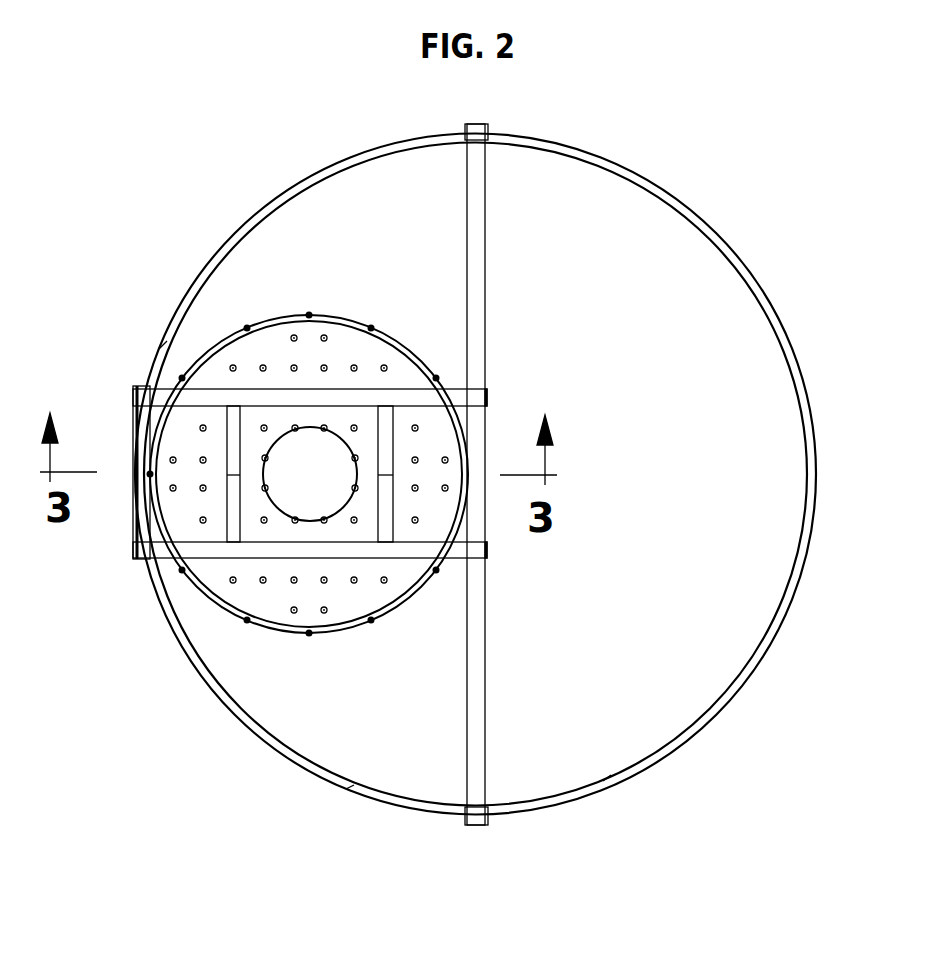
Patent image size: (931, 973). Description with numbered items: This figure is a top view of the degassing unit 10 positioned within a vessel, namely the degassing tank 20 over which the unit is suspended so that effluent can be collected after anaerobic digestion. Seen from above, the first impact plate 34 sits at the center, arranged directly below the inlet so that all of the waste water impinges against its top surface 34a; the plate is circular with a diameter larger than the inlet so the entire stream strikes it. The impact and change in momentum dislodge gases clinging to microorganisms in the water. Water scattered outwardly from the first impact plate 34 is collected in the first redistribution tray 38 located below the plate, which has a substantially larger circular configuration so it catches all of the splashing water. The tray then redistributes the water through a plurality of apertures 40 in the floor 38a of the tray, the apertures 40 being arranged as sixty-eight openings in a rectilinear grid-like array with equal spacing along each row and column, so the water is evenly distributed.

The degassing unit 10 is at (362, 301).
The degassing tank 20 is at (641, 170).
The first impact plate 34 is at (340, 520).
The top surface of the first impact plate 34a is at (330, 497).
The first redistribution tray 38 is at (353, 600).
The floor of the tray 38a is at (243, 590).
The apertures 40 is at (233, 369).